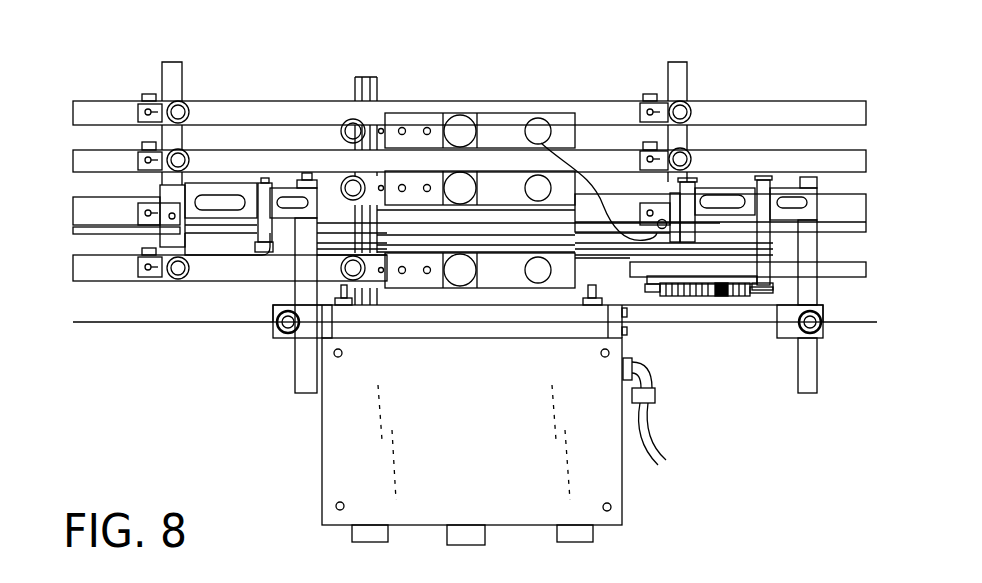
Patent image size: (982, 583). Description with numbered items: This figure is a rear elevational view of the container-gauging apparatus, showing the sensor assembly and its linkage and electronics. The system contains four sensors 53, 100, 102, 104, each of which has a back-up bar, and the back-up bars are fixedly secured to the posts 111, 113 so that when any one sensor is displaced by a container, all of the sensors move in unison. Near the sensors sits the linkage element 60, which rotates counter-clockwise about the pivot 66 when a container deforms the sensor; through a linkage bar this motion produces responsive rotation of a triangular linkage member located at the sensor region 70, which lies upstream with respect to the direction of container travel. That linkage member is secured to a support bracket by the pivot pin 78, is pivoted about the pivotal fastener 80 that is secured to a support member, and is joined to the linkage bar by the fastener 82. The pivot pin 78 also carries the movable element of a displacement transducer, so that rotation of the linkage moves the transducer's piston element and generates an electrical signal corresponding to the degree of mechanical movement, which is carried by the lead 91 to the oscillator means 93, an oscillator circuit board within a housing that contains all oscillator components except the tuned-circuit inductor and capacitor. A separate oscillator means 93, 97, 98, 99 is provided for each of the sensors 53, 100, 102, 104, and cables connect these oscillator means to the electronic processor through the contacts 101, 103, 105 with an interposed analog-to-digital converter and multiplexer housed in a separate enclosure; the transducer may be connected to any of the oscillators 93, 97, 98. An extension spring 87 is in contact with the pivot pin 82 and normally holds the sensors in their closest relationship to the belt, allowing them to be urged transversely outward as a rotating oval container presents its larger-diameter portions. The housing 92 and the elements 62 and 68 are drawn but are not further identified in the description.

The sensor 53 is at (89, 95).
The sensor 100 is at (100, 140).
The sensor 102 is at (92, 243).
The sensor 104 is at (150, 287).
The post 111 is at (178, 80).
The post 113 is at (683, 77).
The linkage element 60 is at (232, 175).
The pin 62 is at (170, 213).
The pivot 66 is at (308, 174).
The bar 68 is at (262, 180).
The oscillator means 98 is at (340, 238).
The contact 101 is at (460, 118).
The contact 103 is at (453, 184).
The contact 105 is at (458, 278).
The oscillator means 93 is at (541, 120).
The oscillator means 97 is at (525, 190).
The oscillator means 99 is at (541, 283).
The lead 91 is at (597, 190).
The sensor region 70 is at (760, 186).
The pivot pin 78 is at (690, 192).
The pivotal fastener 80 is at (813, 248).
The fastener 82 is at (723, 297).
The extension spring 87 is at (692, 303).
The motor housing 92 is at (478, 457).